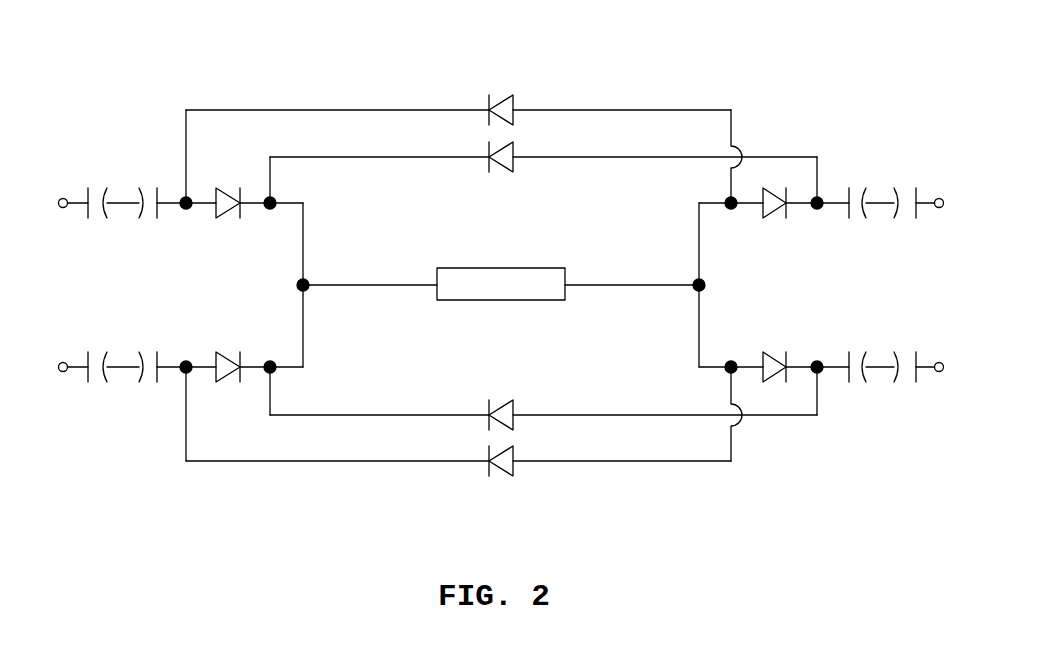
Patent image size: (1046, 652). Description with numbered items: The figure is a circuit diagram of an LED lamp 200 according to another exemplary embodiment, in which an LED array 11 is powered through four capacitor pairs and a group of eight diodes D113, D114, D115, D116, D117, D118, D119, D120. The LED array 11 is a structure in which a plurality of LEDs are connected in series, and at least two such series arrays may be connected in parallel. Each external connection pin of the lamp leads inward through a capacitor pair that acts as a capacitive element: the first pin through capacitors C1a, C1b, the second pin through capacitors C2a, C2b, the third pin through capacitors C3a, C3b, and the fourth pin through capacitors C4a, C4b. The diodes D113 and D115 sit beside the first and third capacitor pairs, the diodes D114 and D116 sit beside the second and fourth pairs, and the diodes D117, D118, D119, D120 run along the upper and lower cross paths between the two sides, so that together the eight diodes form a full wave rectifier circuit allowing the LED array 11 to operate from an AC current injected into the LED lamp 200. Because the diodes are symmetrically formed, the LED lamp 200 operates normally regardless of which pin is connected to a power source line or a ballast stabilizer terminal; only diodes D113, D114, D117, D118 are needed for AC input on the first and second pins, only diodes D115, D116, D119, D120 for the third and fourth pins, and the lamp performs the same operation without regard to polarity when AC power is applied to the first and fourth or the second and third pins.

The LED lamp 200 is at (263, 44).
The LED array 11 is at (543, 268).
The capacitor C1a is at (90, 187).
The capacitor C1b is at (154, 187).
The capacitor C2a is at (911, 187).
The capacitor C2b is at (849, 187).
The capacitor C3a is at (90, 384).
The capacitor C3b is at (154, 384).
The capacitor C4a is at (911, 384).
The capacitor C4b is at (849, 384).
The diode D113 is at (228, 187).
The diode D114 is at (773, 187).
The diode D115 is at (228, 349).
The diode D116 is at (773, 349).
The diode D117 is at (502, 93).
The diode D118 is at (502, 170).
The diode D119 is at (502, 401).
The diode D120 is at (502, 477).